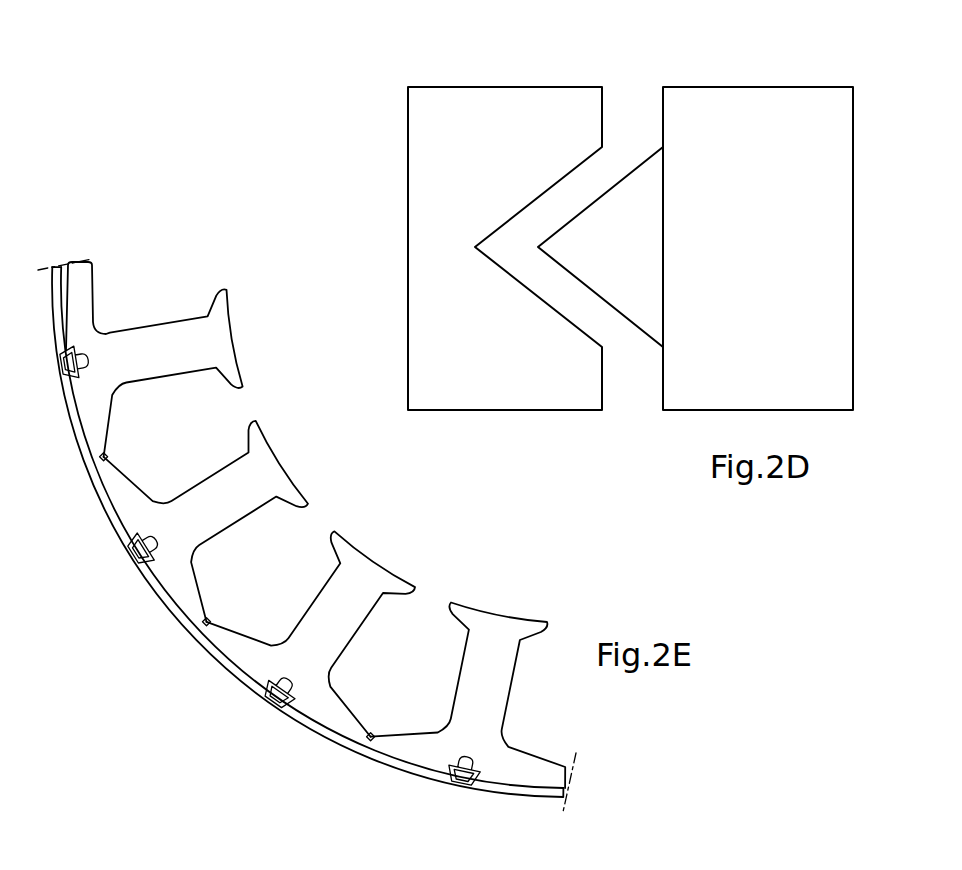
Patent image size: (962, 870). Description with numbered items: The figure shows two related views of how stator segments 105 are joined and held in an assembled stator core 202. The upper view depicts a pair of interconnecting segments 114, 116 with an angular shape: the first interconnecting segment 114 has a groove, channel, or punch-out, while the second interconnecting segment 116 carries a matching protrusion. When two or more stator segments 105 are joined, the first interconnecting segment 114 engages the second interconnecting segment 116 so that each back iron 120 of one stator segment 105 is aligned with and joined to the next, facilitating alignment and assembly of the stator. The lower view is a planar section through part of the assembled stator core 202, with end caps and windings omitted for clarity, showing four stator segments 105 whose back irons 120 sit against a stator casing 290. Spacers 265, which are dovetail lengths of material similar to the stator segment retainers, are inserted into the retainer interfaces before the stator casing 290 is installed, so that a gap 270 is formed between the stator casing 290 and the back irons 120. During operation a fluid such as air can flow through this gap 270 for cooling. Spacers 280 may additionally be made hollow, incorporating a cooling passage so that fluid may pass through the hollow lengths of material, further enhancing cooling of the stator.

In FIG. 2D, the first interconnecting segment 114 is at (578, 87).
In FIG. 2D, the second interconnecting segment 116 is at (796, 87).
In FIG. 2E, the stator core 202 is at (142, 247).
In FIG. 2E, the stator segment 105 is at (230, 330).
In FIG. 2E, the back iron 120 is at (322, 525).
In FIG. 2E, the spacer 265 is at (459, 786).
In FIG. 2E, the gap 270 is at (228, 667).
In FIG. 2E, the spacer 280 is at (134, 553).
In FIG. 2E, the stator casing 290 is at (519, 797).